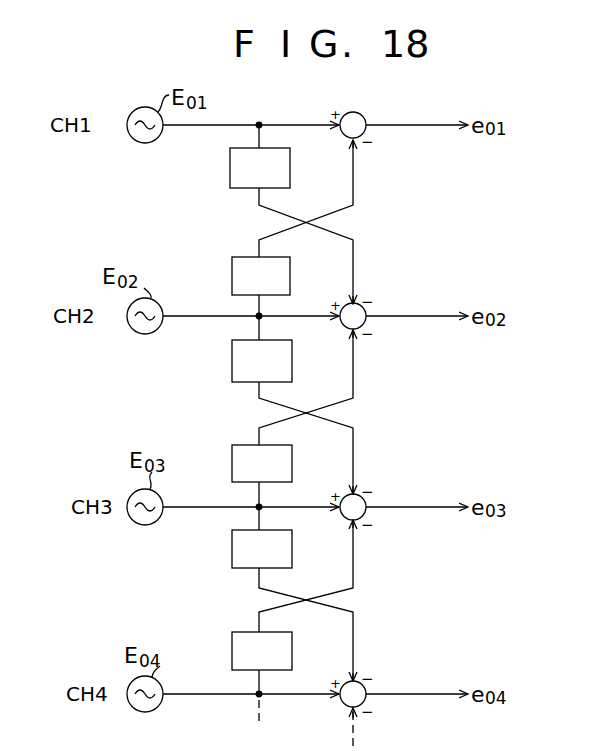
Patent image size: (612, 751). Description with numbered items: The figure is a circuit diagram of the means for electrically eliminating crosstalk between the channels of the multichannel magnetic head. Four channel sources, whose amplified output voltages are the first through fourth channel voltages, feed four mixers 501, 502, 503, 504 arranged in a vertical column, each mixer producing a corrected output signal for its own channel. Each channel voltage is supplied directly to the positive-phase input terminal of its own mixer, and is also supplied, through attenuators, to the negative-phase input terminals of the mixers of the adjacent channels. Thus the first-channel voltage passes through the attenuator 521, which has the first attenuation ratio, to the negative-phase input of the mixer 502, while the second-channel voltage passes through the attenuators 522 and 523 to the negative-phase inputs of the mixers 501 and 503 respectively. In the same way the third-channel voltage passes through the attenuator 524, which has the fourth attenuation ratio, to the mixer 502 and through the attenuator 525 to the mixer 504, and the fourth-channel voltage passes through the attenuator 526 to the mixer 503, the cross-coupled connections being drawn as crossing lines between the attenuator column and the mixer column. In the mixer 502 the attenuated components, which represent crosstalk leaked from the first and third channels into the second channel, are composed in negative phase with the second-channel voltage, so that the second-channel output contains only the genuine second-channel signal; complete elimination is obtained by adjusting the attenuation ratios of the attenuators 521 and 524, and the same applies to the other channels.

The mixer 501 is at (362, 118).
The mixer 502 is at (362, 307).
The mixer 503 is at (362, 498).
The mixer 504 is at (364, 686).
The attenuator 521 is at (229, 173).
The attenuator 522 is at (232, 268).
The attenuator 523 is at (232, 371).
The attenuator 524 is at (232, 455).
The attenuator 525 is at (232, 553).
The attenuator 526 is at (232, 647).